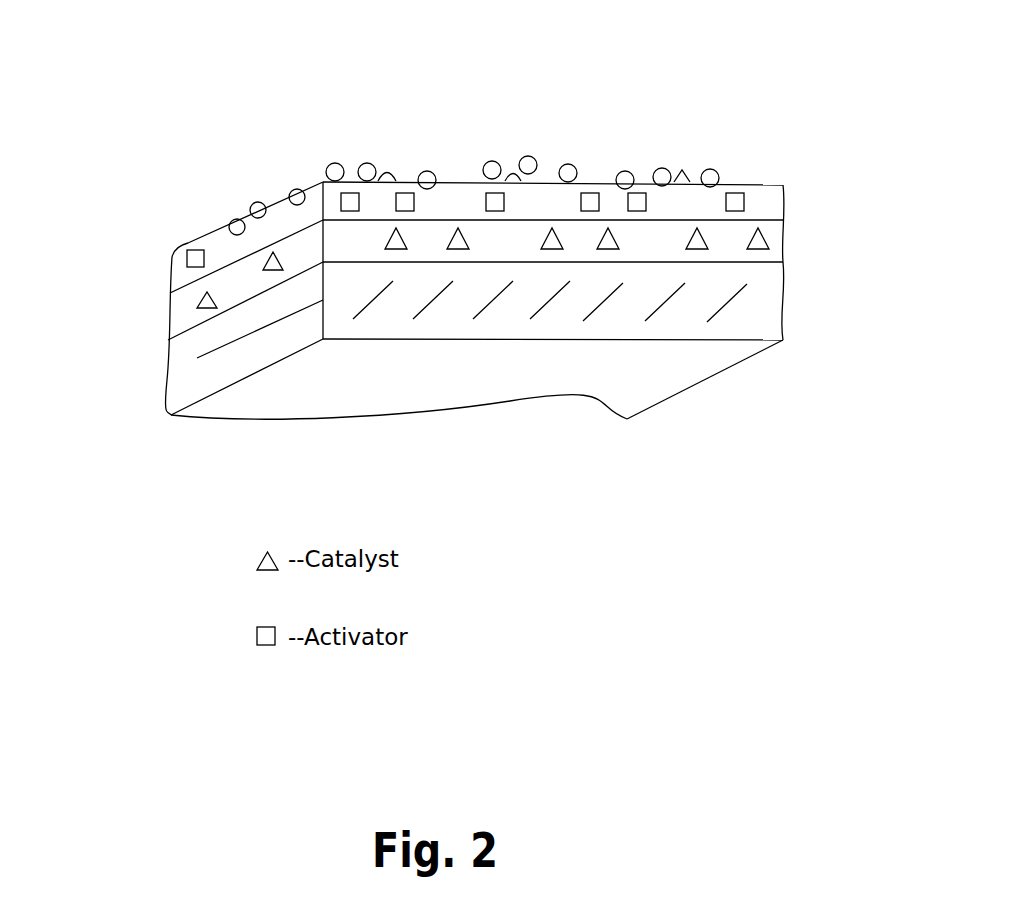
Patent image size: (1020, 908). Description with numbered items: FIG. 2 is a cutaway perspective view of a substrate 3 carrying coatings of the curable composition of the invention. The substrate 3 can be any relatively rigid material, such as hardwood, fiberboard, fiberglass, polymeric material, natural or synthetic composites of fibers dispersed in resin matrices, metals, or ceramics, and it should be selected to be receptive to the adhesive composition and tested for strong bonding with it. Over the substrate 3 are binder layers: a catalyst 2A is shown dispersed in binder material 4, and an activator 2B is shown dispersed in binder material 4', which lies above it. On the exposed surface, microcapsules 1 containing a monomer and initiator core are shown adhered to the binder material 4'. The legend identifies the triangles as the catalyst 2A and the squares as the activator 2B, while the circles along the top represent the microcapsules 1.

The microcapsules 1 is at (365, 150).
The catalyst 2A is at (200, 305).
The activator 2B is at (188, 248).
The substrate 3 is at (185, 384).
The binder material 4 is at (529, 307).
The binder material 4' is at (475, 220).